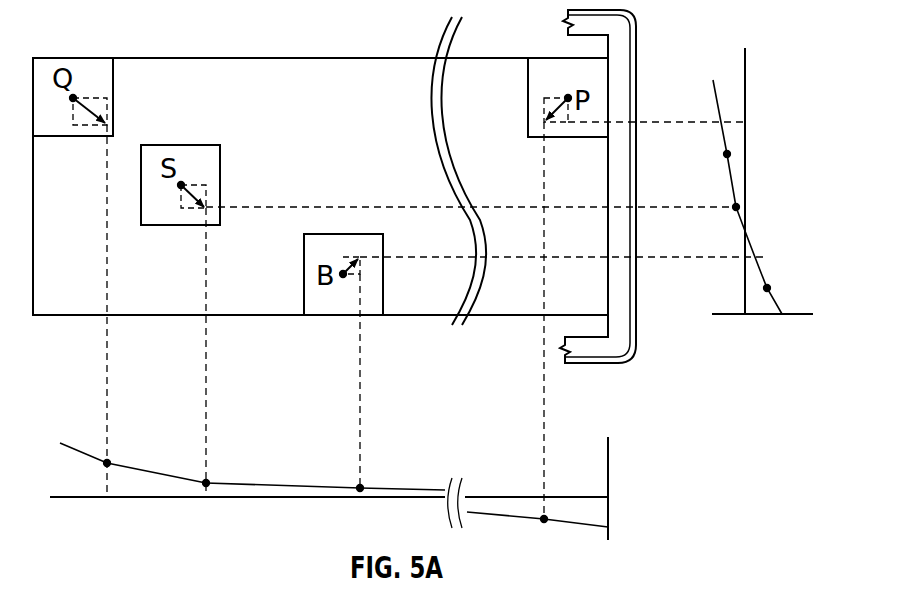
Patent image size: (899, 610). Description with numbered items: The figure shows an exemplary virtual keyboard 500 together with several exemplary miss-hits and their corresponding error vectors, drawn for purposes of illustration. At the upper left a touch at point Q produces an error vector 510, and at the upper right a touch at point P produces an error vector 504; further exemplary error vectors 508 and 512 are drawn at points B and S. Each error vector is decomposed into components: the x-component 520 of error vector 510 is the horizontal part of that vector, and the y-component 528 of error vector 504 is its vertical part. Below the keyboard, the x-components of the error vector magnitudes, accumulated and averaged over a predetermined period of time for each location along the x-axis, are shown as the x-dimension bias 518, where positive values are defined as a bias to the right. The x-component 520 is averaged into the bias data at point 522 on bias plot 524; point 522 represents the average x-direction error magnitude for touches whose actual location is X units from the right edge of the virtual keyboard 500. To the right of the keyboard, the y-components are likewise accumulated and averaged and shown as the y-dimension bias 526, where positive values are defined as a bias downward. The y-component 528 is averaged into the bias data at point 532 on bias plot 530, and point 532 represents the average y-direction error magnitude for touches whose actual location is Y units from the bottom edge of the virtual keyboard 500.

The virtual keyboard 500 is at (220, 58).
The error vector 504 is at (566, 96).
The pixel position vector B 508 is at (352, 268).
The error vector 510 is at (100, 117).
The pixel position vector S 512 is at (196, 196).
The x-dimension bias 518 is at (588, 497).
The x-component 520 is at (91, 126).
The point 522 is at (110, 462).
The bias plot 524 is at (283, 483).
The y-dimension bias 526 is at (760, 316).
The y-component 528 is at (567, 120).
The bias plot 530 is at (716, 95).
The point 532 is at (728, 153).